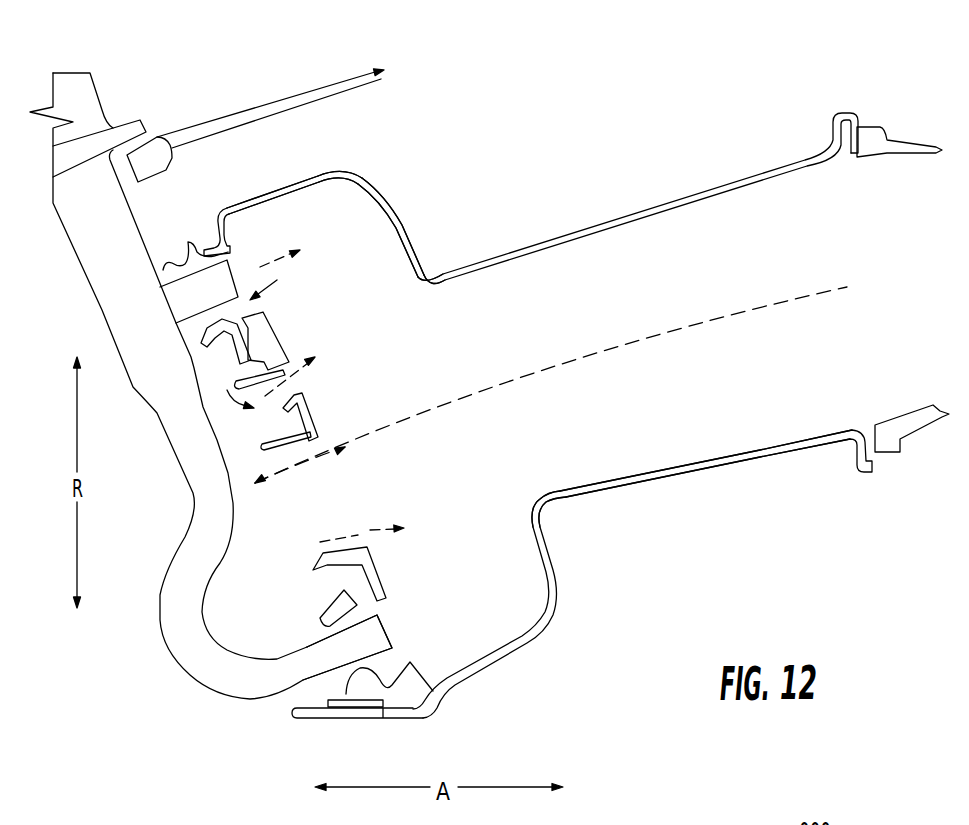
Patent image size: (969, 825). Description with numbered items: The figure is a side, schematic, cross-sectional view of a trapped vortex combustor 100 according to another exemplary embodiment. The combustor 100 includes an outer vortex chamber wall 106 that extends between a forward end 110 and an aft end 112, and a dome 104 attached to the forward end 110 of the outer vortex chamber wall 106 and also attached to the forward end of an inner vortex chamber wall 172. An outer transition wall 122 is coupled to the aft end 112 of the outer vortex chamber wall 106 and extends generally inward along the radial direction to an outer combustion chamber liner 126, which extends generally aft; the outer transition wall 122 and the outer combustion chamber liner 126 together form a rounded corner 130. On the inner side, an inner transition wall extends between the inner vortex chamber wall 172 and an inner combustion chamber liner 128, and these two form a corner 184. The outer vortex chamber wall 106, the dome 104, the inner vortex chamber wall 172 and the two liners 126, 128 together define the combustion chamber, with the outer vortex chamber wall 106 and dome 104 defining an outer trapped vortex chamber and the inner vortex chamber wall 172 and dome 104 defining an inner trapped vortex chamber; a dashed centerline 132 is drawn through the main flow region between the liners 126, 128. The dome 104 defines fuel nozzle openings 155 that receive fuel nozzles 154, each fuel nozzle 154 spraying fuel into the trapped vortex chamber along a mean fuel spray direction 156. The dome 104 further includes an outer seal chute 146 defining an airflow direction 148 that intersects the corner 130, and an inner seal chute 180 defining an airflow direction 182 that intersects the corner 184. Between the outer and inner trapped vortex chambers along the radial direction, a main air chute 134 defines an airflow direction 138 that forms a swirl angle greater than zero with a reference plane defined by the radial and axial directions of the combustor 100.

The trapped vortex combustor 100 is at (666, 104).
The dome 104 is at (276, 336).
The outer vortex chamber wall 106 is at (277, 191).
The forward end 110 is at (199, 201).
The aft end 112 is at (350, 160).
The outer transition wall 122 is at (404, 218).
The outer combustion chamber liner 126 is at (577, 228).
The inner combustion chamber liner 128 is at (702, 473).
The corner 130 is at (427, 288).
The centerline 132 is at (748, 307).
The main air chute 134 is at (256, 494).
The airflow direction 138 is at (325, 455).
The outer seal chute 146 is at (226, 390).
The airflow direction 148 is at (322, 360).
The fuel nozzle 154 is at (203, 313).
The fuel nozzle opening 155 is at (285, 282).
The mean fuel spray direction 156 is at (263, 265).
The inner vortex chamber wall 172 is at (500, 663).
The inner seal chute 180 is at (288, 560).
The airflow direction 182 is at (373, 525).
The corner 184 is at (518, 503).